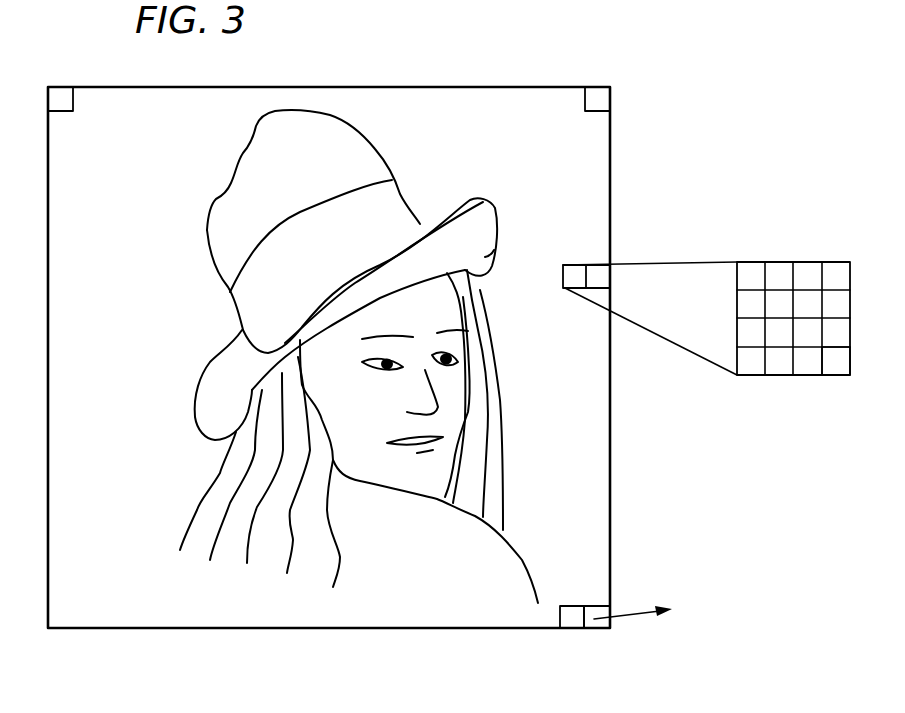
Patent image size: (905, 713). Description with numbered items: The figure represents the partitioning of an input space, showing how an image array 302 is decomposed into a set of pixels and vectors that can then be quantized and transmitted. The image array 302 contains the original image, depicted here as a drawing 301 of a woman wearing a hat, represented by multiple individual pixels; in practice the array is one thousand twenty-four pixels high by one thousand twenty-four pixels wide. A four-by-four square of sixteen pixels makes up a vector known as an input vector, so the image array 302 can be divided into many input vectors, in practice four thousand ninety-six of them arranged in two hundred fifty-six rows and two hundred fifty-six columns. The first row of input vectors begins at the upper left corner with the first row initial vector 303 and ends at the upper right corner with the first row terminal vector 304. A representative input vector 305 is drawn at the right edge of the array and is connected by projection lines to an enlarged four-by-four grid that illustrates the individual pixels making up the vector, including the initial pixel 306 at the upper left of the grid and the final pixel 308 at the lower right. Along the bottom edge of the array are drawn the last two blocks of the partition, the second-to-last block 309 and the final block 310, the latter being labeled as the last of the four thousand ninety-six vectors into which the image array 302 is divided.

The image content (portrait of woman wearing hat) 301 is at (208, 362).
The image array 302 is at (410, 87).
The first row initial vector 303 is at (62, 97).
The first row terminal vector 304 is at (604, 100).
The representative input vector 305 is at (566, 273).
The initial pixel 306 is at (745, 272).
The final pixel 308 is at (830, 362).
The second to last 4x4 pixel block 309 is at (572, 625).
The last 4x4 pixel block (vector #4096) 310 is at (598, 625).